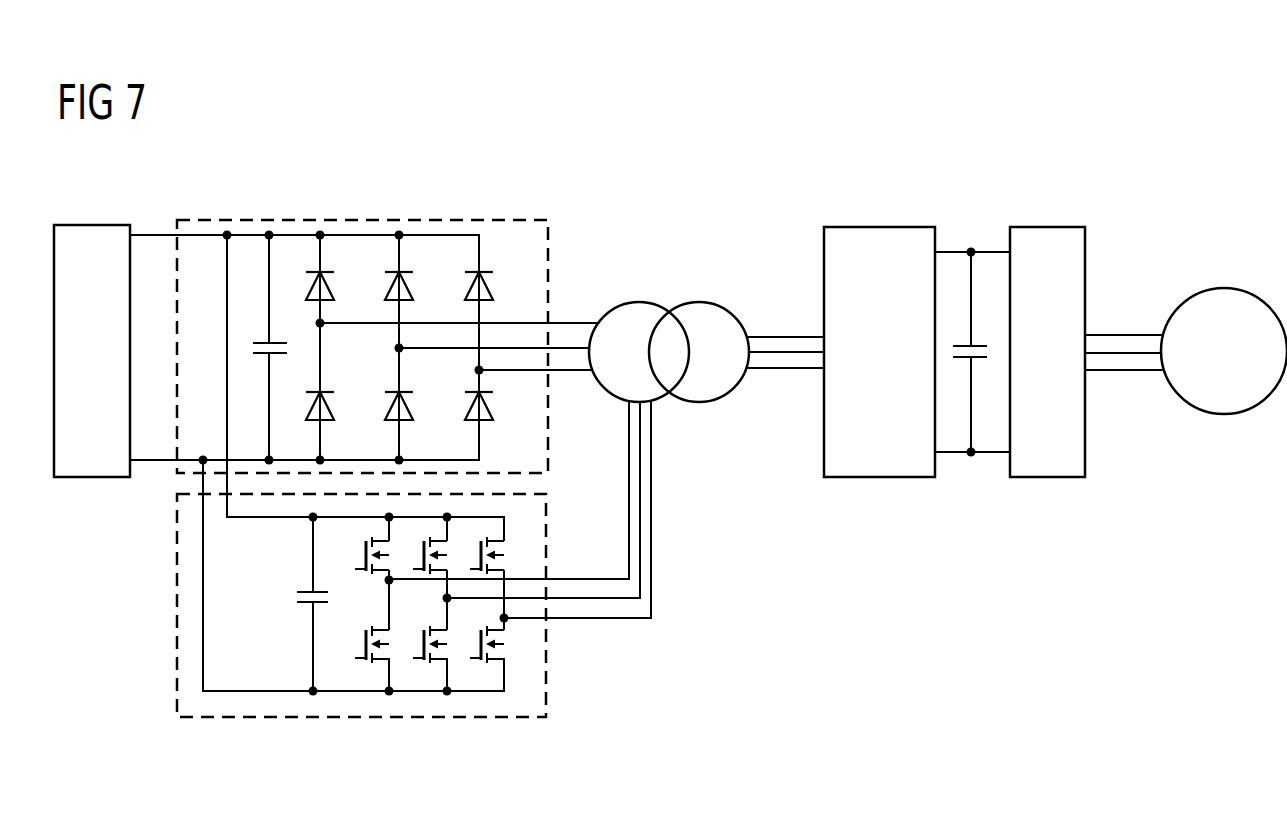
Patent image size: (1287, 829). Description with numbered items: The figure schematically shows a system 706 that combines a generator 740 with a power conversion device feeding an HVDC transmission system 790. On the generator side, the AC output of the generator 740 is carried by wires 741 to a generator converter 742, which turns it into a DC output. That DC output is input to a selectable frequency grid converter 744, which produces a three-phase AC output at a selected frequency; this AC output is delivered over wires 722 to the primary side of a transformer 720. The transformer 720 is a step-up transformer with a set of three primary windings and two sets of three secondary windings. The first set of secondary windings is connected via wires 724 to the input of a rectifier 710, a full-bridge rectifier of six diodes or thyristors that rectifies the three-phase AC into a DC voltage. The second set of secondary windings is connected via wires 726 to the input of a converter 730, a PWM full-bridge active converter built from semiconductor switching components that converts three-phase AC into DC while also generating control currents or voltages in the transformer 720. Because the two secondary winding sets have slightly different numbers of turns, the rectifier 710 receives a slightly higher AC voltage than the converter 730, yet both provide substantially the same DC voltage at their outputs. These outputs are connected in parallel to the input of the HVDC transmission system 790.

The electrical power system 706 is at (984, 159).
The rectifier 710 is at (341, 219).
The transformer 720 is at (669, 310).
The wires 722 is at (773, 337).
The wires 724 is at (573, 323).
The wires 726 is at (652, 492).
The converter 730 is at (547, 675).
The generator 740 is at (1224, 288).
The wires 741 is at (1112, 335).
The generator converter 742 is at (1046, 479).
The selectable frequency grid converter 744 is at (878, 479).
The HVDC transmission system 790 is at (93, 478).